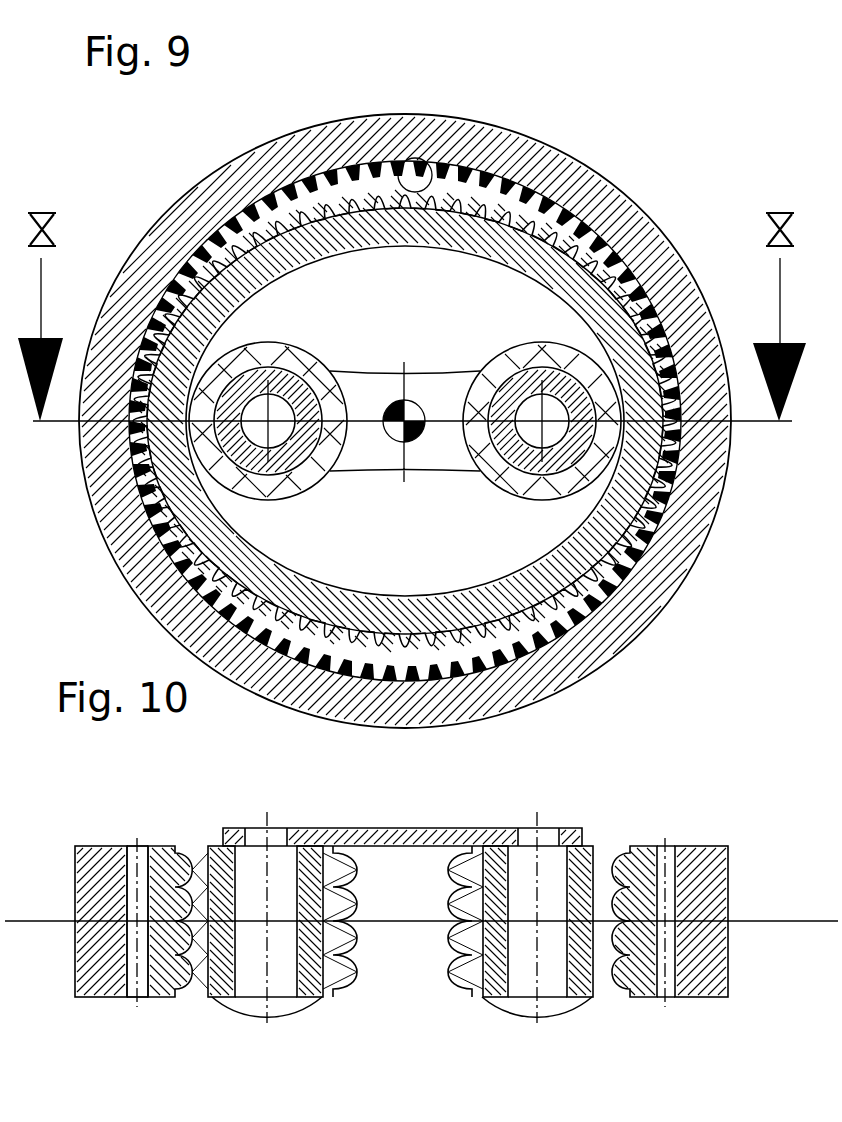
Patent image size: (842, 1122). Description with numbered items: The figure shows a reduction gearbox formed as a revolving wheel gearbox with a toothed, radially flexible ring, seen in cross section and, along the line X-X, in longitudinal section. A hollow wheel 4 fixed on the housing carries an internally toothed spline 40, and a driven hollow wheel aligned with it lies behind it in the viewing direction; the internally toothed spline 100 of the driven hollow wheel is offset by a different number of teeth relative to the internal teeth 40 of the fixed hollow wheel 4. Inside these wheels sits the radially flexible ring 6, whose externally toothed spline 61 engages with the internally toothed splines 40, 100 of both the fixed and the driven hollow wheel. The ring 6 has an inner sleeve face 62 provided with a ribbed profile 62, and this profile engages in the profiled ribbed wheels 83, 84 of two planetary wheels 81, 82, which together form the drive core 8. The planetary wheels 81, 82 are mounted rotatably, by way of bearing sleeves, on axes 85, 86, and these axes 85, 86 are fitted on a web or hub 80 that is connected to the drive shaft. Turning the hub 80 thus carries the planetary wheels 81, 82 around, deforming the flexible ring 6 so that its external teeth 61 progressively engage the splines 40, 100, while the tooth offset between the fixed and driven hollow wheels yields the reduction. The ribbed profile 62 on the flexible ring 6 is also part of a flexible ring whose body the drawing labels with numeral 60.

In FIG. 9, the hollow wheel fixed on the housing 4 is at (405, 393).
In FIG. 10, the hollow wheel fixed on the housing 4 is at (103, 995).
In FIG. 9, the internally toothed spline 40 is at (432, 167).
In FIG. 10, the internally toothed spline 40 is at (132, 990).
In FIG. 9, the radially flexible ring 6 is at (411, 355).
In FIG. 10, the radially flexible ring 6 is at (387, 883).
In FIG. 9, the flexspline body 60 is at (320, 232).
In FIG. 9, the externally toothed spline 61 is at (378, 197).
In FIG. 10, the externally toothed spline 61 is at (142, 850).
In FIG. 9, the inner sleeve face with ribbed profile 62 is at (383, 247).
In FIG. 10, the inner sleeve face with ribbed profile 62 is at (618, 848).
In FIG. 9, the internally toothed spline of the driven hollow wheel 100 is at (268, 185).
In FIG. 9, the drive core 8 is at (405, 427).
In FIG. 9, the hub 80 is at (383, 464).
In FIG. 10, the hub 80 is at (432, 828).
In FIG. 9, the planetary wheel 81 is at (286, 423).
In FIG. 10, the planetary wheel 81 is at (298, 977).
In FIG. 9, the planetary wheel 82 is at (536, 428).
In FIG. 10, the planetary wheel 82 is at (546, 970).
In FIG. 9, the profiled ribbed wheel 83 is at (287, 480).
In FIG. 10, the profiled ribbed wheel 83 is at (337, 975).
In FIG. 9, the profiled ribbed wheel 84 is at (551, 492).
In FIG. 10, the profiled ribbed wheel 84 is at (602, 989).
In FIG. 9, the axis of the planetary wheel 85 is at (328, 383).
In FIG. 10, the axis of the planetary wheel 85 is at (308, 995).
In FIG. 9, the axis of the planetary wheel 86 is at (505, 479).
In FIG. 10, the axis of the planetary wheel 86 is at (483, 985).